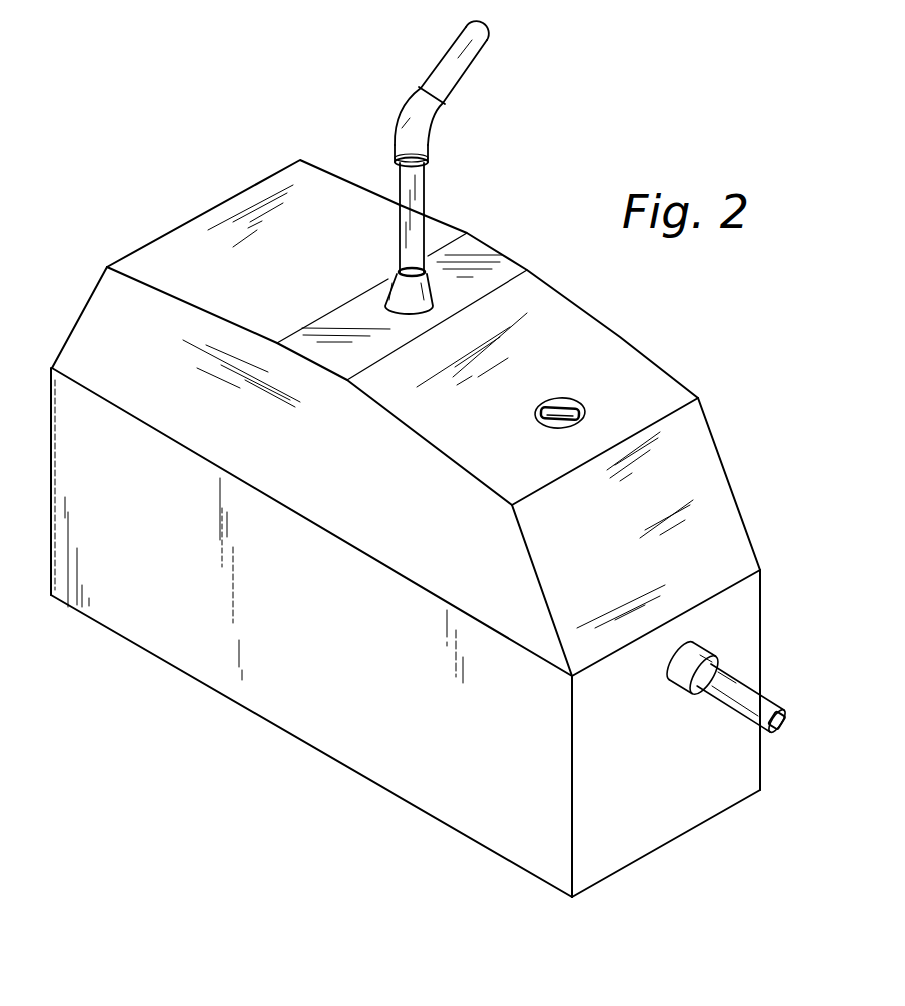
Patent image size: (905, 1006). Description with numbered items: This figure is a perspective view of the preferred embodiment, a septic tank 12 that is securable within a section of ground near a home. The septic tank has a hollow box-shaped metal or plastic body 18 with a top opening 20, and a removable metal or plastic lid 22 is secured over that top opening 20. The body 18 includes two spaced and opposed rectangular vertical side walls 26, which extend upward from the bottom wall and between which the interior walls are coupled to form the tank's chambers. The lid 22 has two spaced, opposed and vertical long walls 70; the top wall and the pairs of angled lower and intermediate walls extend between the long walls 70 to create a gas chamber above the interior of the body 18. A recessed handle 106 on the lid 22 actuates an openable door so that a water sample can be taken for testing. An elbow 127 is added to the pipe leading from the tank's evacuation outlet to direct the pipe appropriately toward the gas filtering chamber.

The septic tank 12 is at (177, 278).
The body 18 is at (208, 642).
The top opening 20 is at (442, 598).
The lid 22 is at (705, 476).
The side walls 26 is at (760, 628).
The long walls 70 is at (437, 530).
The recessed handle 106 is at (570, 403).
The elbow 127 is at (399, 115).